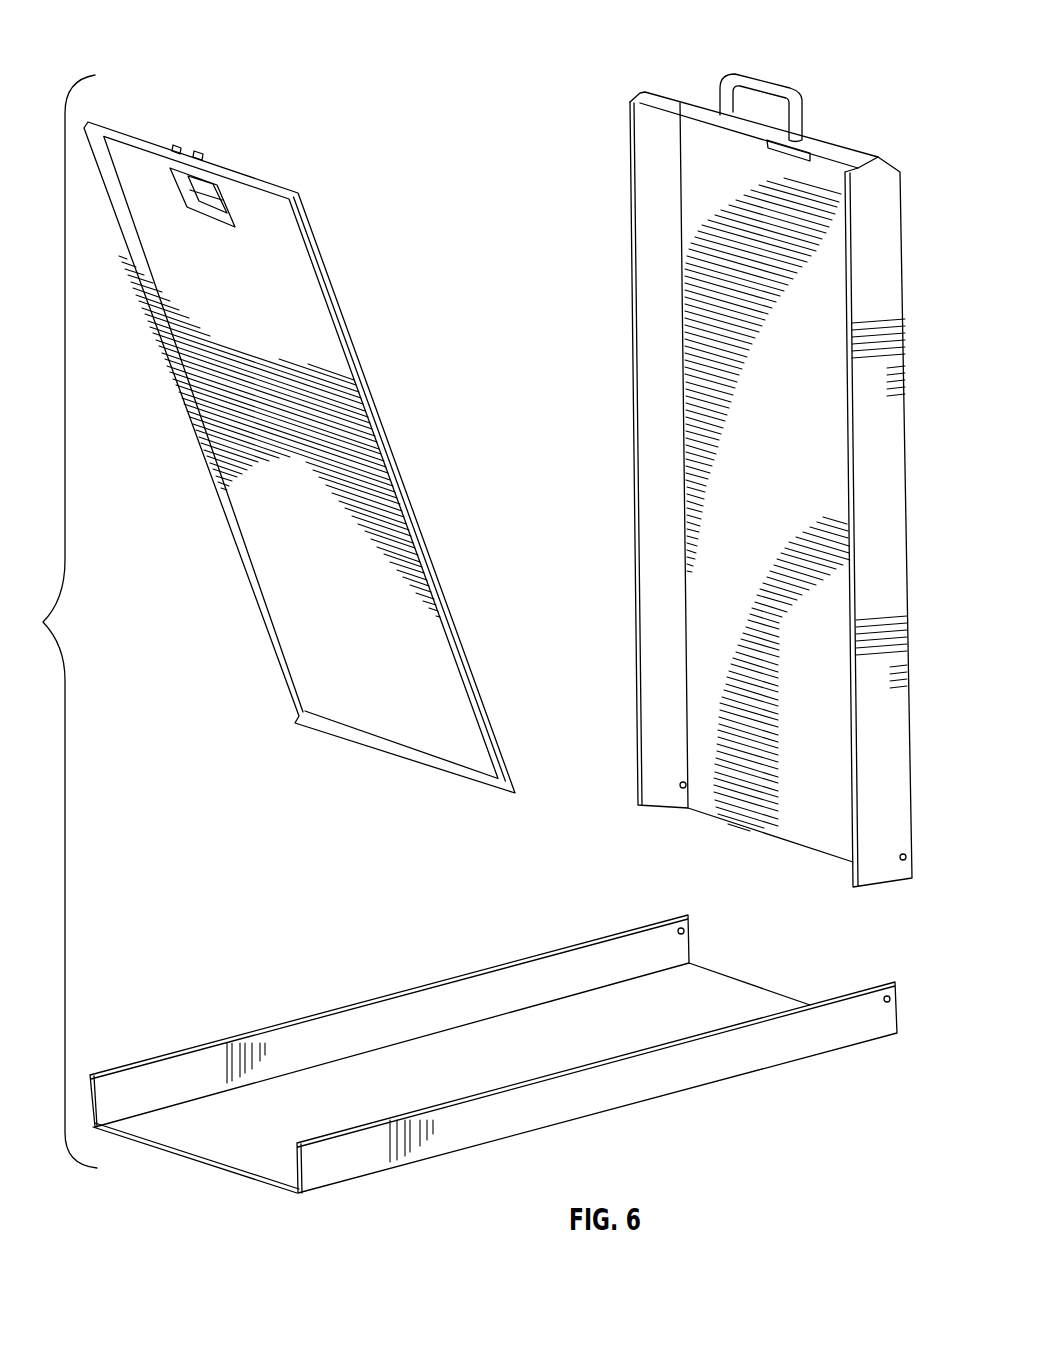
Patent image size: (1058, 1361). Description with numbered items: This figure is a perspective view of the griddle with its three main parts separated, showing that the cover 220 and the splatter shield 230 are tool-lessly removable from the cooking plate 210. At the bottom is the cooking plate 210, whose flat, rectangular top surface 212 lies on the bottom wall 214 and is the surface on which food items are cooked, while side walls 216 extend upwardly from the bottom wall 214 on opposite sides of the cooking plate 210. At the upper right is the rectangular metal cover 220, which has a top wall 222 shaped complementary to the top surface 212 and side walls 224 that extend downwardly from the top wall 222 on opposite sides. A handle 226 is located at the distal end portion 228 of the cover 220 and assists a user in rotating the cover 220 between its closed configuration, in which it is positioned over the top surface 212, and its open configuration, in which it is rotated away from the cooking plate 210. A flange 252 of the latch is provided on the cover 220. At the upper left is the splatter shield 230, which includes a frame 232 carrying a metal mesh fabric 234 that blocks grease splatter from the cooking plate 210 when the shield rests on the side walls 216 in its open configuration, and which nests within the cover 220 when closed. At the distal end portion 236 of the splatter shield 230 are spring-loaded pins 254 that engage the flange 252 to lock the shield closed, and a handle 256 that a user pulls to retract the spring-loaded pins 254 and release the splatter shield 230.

The cooking plate 210 is at (493, 1067).
The top surface 212 is at (448, 1060).
The bottom wall 214 is at (232, 1126).
The side walls 216 is at (310, 1043).
The cover 220 is at (910, 765).
The top wall 222 is at (720, 327).
The side walls 224 is at (658, 493).
The handle 226 is at (775, 88).
The distal end portion 228 is at (749, 451).
The splatter shield 230 is at (302, 418).
The frame 232 is at (248, 608).
The mesh fabric 234 is at (343, 417).
The distal end portion 236 is at (307, 187).
The flange 252 is at (780, 148).
The spring-loaded pins 254 is at (198, 154).
The handle 256 is at (212, 187).